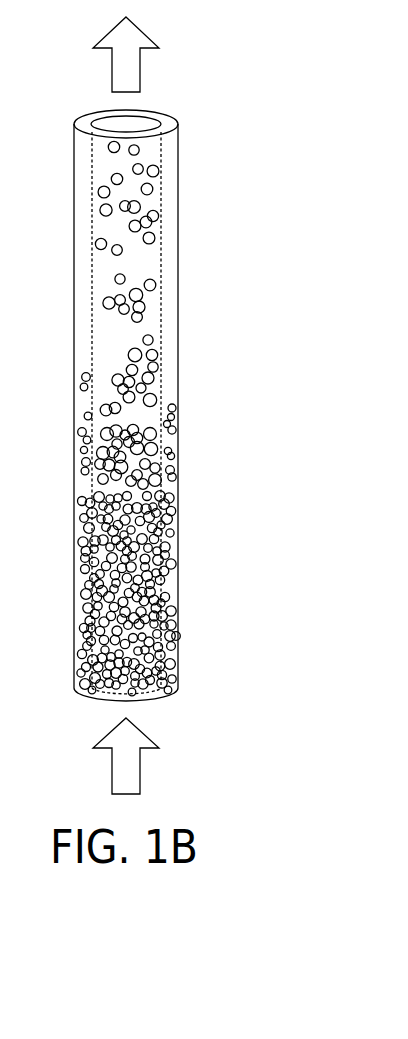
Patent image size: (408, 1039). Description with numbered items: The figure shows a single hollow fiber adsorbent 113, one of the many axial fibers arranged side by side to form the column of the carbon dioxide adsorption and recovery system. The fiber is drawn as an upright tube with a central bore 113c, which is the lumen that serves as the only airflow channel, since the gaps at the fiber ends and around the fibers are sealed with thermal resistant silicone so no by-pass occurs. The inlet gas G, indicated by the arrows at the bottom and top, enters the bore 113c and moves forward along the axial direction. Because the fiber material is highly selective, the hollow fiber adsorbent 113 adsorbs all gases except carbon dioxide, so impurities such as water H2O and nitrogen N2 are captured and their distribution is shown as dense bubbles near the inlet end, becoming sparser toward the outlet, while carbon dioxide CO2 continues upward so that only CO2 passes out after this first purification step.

The hollow fiber adsorbent 113 is at (75, 323).
The bore 113c is at (150, 122).
The carbon dioxide CO2 is at (153, 302).
The nitrogen N2 is at (173, 587).
The water molecules H2O is at (177, 635).
The inlet gas G is at (129, 405).